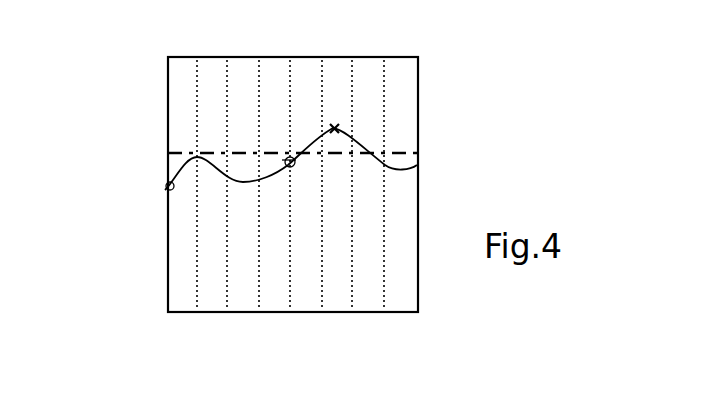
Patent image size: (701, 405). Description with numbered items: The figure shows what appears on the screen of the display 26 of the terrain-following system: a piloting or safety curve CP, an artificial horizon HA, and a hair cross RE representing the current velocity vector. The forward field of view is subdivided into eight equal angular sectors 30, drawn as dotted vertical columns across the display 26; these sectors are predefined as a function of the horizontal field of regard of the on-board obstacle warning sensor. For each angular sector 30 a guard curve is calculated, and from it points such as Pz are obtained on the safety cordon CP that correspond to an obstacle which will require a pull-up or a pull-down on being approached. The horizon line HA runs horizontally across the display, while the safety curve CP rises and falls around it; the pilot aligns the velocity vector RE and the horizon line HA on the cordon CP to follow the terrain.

The display 26 is at (168, 89).
The angular sectors 30 is at (213, 64).
The artificial horizon HA is at (168, 152).
The safety curve CP is at (165, 190).
The point on safety cordon Pz is at (337, 115).
The hair cross RE is at (291, 167).